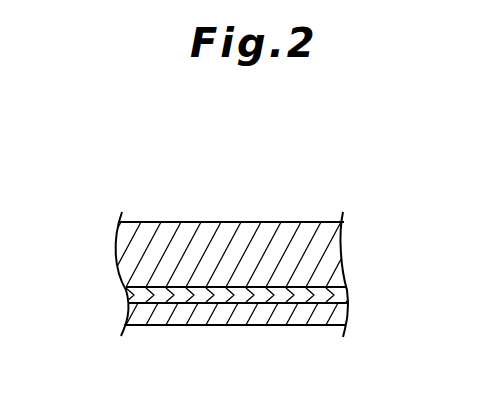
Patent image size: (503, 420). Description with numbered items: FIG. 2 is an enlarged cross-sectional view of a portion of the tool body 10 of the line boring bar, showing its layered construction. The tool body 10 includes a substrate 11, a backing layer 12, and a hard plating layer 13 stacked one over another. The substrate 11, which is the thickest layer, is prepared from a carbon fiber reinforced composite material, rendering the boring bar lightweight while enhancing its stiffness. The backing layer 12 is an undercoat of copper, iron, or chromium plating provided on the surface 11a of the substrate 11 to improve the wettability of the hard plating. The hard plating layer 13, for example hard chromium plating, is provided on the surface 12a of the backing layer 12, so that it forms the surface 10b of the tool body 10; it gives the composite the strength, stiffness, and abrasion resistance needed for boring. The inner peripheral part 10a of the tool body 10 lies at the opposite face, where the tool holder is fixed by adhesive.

The tool body 10 is at (319, 185).
The inner peripheral part 10a is at (200, 222).
The surface of the tool body 10b is at (252, 325).
The substrate 11 is at (356, 249).
The surface of the substrate 11a is at (130, 288).
The backing layer 12 is at (364, 292).
The surface of the backing layer 12a is at (130, 307).
The hard plating layer 13 is at (366, 318).